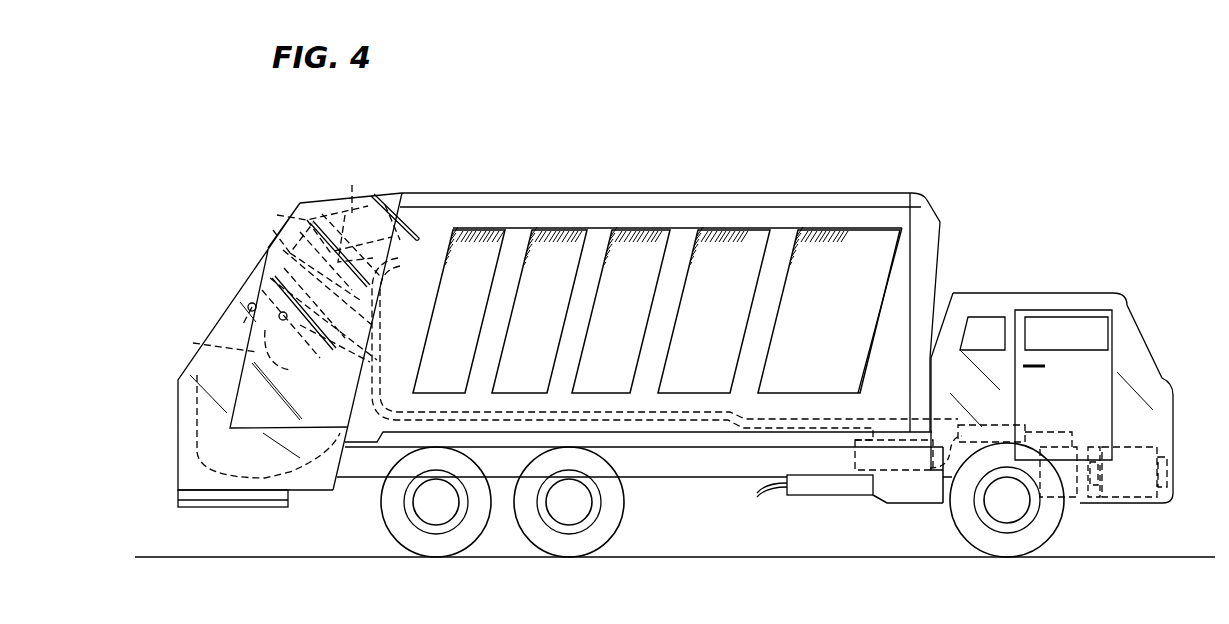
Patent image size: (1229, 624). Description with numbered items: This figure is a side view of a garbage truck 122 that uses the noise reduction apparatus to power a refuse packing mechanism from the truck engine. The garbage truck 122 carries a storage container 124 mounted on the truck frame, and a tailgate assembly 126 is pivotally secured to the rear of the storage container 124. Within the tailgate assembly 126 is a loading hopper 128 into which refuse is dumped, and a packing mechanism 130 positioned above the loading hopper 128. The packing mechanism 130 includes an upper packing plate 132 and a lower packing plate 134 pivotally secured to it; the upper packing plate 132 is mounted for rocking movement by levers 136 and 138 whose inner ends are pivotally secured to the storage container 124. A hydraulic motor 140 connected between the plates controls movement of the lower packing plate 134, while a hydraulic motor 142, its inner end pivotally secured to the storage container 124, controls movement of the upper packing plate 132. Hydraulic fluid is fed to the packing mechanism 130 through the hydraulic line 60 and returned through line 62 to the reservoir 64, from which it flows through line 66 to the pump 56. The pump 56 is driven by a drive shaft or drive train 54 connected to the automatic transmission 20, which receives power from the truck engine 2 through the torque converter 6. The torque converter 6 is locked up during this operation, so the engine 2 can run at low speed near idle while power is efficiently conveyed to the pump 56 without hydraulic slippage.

The truck engine 2 is at (1140, 447).
The torque converter 6 is at (1100, 445).
The automatic transmission 20 is at (1073, 450).
The drive shaft or drive train 54 is at (1040, 427).
The pump 56 is at (981, 457).
The hydraulic line 60 is at (403, 313).
The line 62 is at (398, 387).
The reservoir 64 is at (855, 458).
The line 66 is at (923, 482).
The garbage truck 122 is at (655, 158).
The storage container 124 is at (715, 248).
The tailgate assembly 126 is at (185, 423).
The loading hopper 128 is at (218, 458).
The packing mechanism 130 is at (288, 247).
The upper packing plate 132 is at (370, 202).
The lower packing plate 134 is at (220, 349).
The lever 136 is at (412, 222).
The lever 138 is at (333, 348).
The hydraulic motor 140 is at (320, 224).
The hydraulic motor 142 is at (373, 258).